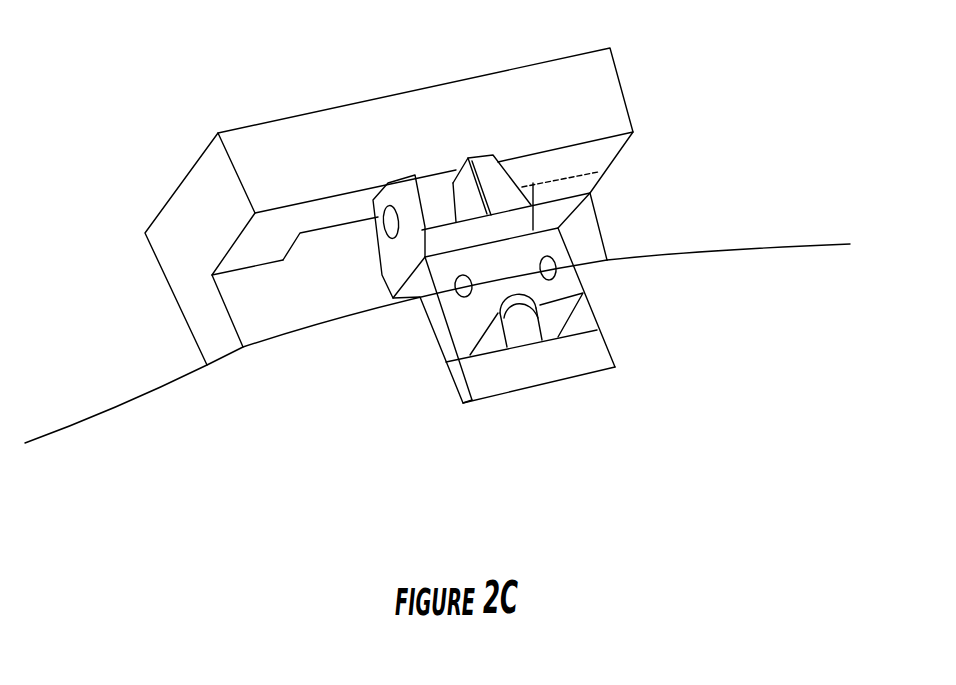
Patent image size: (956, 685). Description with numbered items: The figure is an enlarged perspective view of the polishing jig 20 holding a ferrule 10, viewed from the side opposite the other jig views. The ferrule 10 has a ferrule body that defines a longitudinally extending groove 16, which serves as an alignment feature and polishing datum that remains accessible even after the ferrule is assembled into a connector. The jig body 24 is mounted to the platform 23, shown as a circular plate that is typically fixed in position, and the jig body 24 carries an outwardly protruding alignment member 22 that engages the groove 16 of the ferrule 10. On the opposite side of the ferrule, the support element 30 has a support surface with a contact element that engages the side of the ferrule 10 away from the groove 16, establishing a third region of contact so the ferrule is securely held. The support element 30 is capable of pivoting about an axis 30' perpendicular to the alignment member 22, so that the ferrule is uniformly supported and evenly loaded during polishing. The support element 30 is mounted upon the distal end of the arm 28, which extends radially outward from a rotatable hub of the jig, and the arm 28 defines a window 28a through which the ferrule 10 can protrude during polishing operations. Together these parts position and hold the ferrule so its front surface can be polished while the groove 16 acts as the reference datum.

The ferrule 10 is at (547, 245).
The groove 16 is at (500, 312).
The polishing jig 20 is at (135, 183).
The alignment member 22 is at (515, 322).
The platform 23 is at (680, 290).
The jig body 24 is at (568, 366).
The arm 28 is at (205, 333).
The window 28a is at (307, 252).
The support element 30 is at (578, 162).
The axis 30' is at (363, 246).